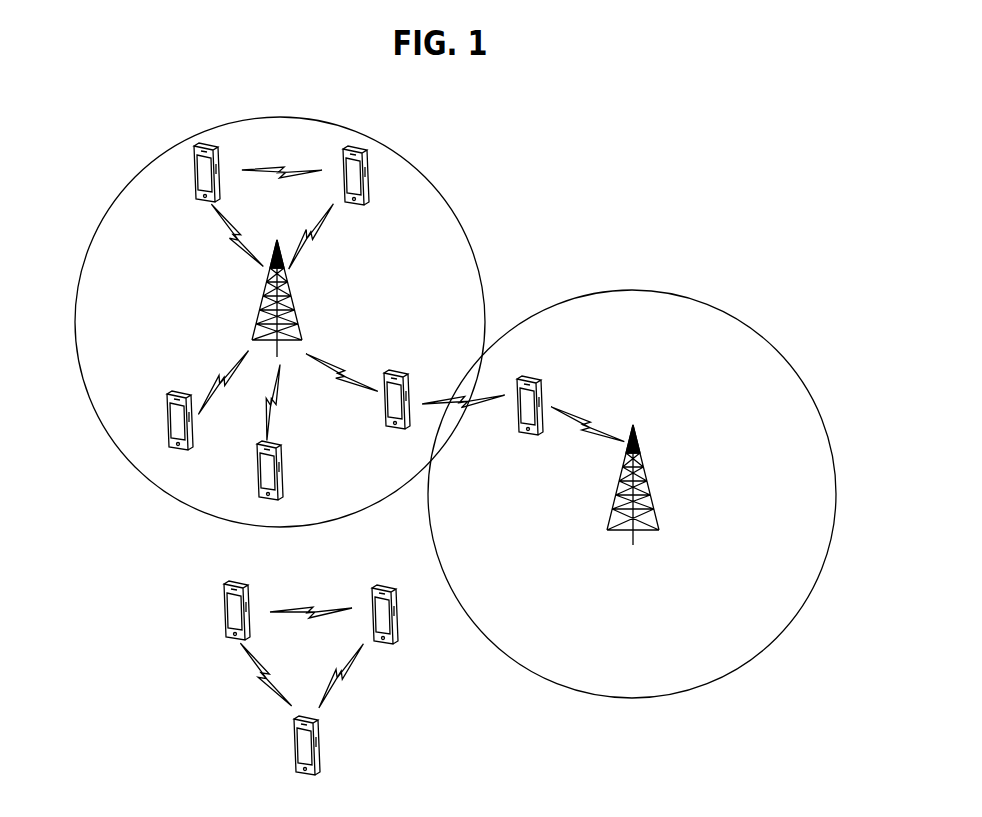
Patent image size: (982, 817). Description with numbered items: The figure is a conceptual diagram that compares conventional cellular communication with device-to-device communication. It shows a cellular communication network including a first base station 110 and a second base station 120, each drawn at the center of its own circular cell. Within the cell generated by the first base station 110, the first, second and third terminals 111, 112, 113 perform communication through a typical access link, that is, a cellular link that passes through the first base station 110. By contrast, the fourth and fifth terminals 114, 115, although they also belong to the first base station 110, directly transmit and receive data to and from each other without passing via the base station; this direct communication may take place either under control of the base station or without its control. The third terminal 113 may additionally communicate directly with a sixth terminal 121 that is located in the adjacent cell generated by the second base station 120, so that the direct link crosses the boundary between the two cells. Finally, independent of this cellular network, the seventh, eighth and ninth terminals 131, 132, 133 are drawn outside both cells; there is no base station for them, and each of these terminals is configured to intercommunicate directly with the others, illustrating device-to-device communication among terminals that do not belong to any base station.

The first base station 110 is at (271, 279).
The first terminal 111 is at (180, 396).
The second terminal 112 is at (275, 449).
The third terminal 113 is at (397, 374).
The fourth terminal 114 is at (207, 150).
The fifth terminal 115 is at (355, 153).
The second base station 120 is at (634, 432).
The sixth terminal 121 is at (528, 380).
The seventh terminal 131 is at (237, 584).
The eighth terminal 132 is at (385, 590).
The ninth terminal 133 is at (320, 747).